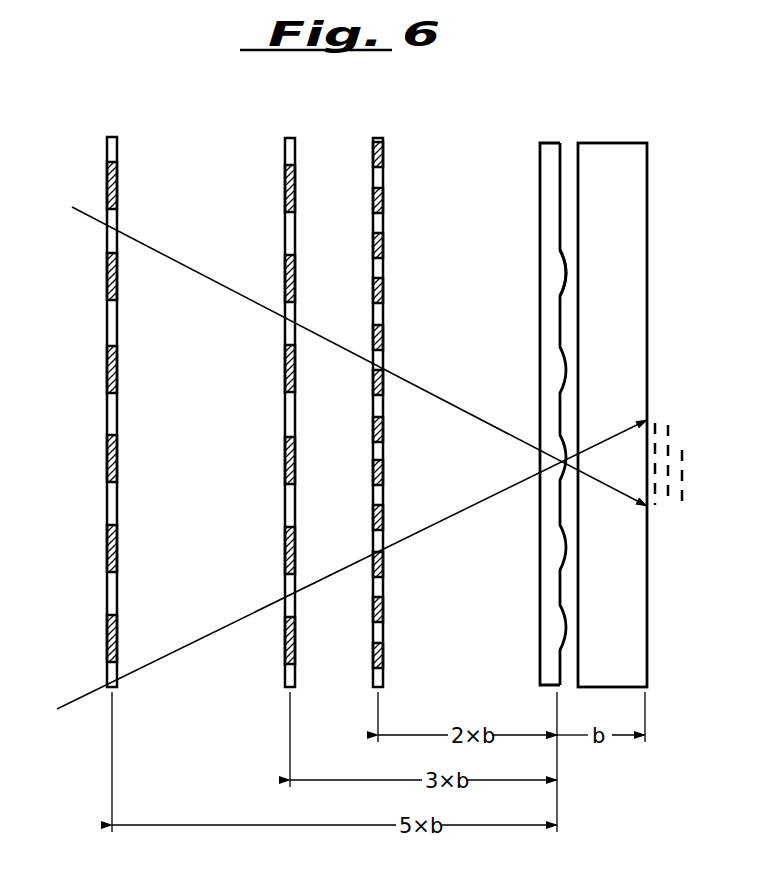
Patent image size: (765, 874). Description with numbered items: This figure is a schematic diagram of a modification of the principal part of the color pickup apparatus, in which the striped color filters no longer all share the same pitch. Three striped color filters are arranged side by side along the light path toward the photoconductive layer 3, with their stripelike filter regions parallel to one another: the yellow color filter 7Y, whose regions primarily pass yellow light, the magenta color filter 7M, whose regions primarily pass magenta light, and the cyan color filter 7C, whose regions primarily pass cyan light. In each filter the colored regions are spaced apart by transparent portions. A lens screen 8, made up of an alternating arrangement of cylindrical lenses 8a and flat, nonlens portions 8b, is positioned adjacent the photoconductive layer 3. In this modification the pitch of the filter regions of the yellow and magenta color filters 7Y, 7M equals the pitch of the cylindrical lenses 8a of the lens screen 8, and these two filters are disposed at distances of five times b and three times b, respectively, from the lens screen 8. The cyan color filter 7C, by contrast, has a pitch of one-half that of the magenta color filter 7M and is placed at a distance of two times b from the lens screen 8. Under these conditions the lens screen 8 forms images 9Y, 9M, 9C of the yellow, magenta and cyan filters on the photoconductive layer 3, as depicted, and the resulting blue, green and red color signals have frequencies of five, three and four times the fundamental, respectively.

The striped color filter 7Y is at (138, 113).
The striped color filter 7M is at (312, 113).
The striped color filter 7C is at (378, 138).
The lens screen 8 is at (545, 143).
The cylindrical lenses 8a is at (562, 185).
The flat nonlens portions 8b is at (560, 236).
The photoconductive layer 3 is at (647, 163).
The image of yellow color filter 9Y is at (655, 422).
The image of magenta color filter 9M is at (668, 427).
The image of cyan color filter 9C is at (682, 450).